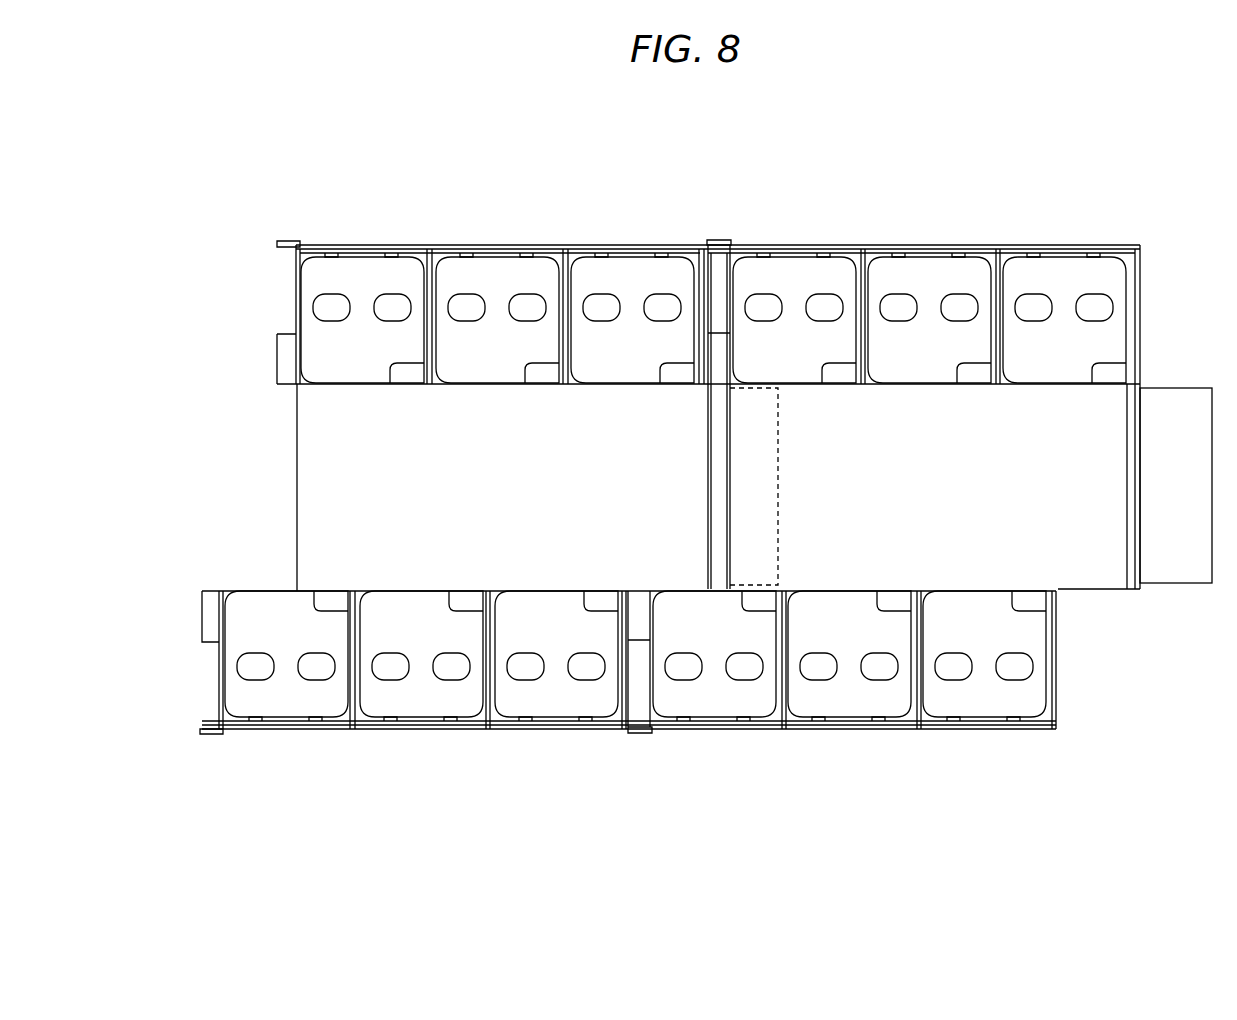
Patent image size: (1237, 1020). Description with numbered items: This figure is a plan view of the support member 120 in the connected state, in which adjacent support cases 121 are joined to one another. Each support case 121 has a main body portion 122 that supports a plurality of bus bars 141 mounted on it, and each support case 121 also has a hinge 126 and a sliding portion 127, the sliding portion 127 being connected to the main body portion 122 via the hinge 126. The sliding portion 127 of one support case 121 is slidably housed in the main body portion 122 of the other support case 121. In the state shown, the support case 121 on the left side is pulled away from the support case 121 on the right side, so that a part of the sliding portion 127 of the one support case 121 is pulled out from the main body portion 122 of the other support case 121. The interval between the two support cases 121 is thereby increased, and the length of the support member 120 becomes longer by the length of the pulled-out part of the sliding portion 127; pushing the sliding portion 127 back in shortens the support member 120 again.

The support member 120 is at (270, 142).
The support case 121 is at (292, 232).
The main body portion 122 is at (336, 478).
The hinge 126 is at (700, 415).
The sliding portion 127 is at (1178, 435).
The bus bar 141 is at (370, 278).